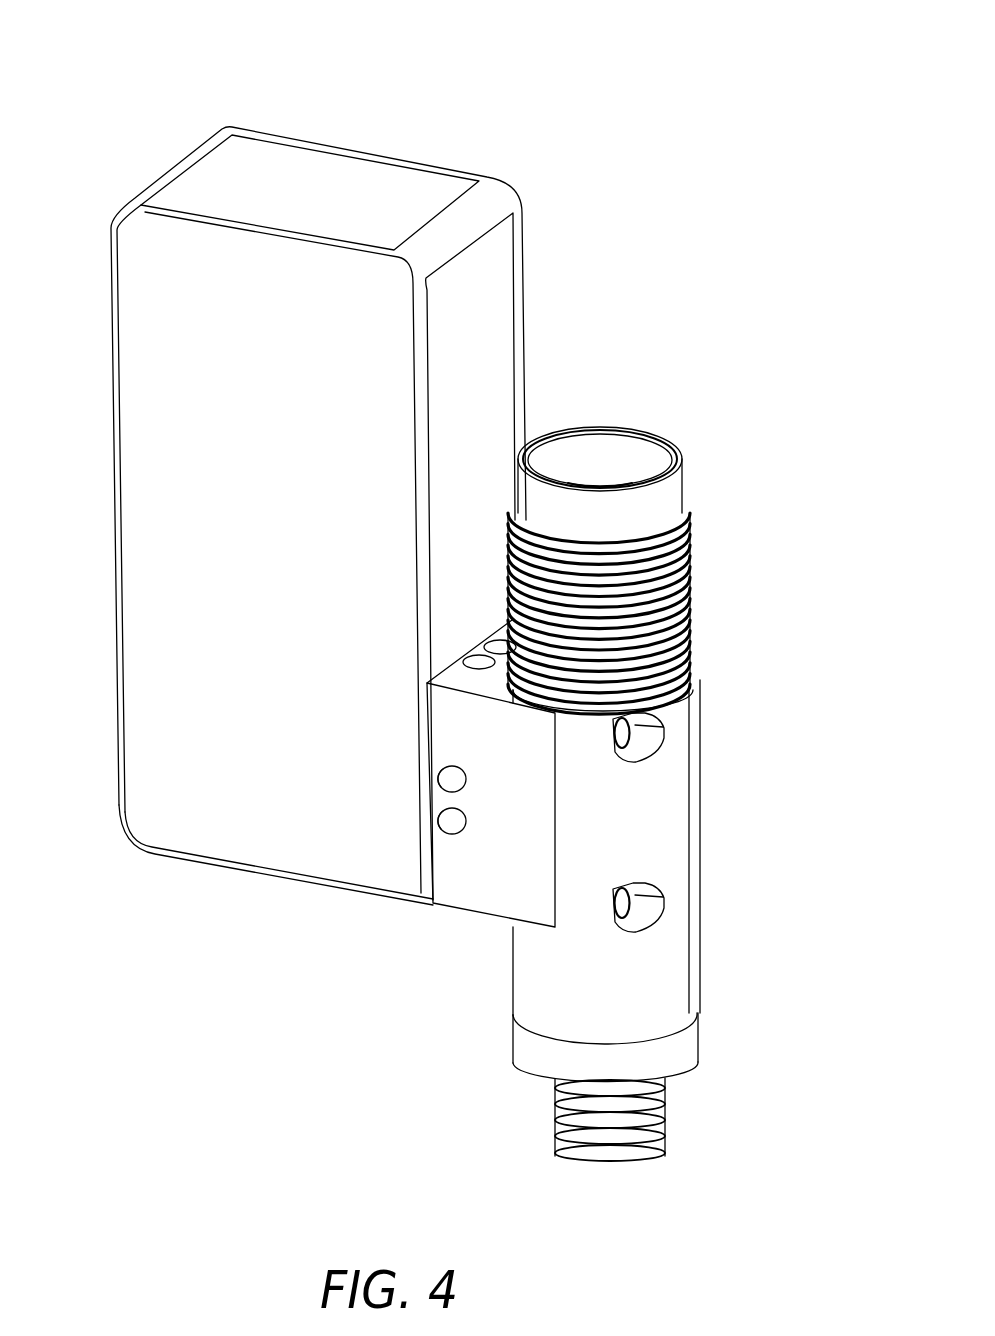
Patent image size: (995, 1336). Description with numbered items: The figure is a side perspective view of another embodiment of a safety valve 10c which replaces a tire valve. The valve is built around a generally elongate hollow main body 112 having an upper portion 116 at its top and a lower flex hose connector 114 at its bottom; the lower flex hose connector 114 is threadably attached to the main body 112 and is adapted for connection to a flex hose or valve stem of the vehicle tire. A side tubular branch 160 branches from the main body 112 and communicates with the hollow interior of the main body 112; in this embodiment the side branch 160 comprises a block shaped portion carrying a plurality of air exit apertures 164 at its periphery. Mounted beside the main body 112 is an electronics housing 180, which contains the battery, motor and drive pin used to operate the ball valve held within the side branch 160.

The safety valve 10c is at (75, 188).
The main body 112 is at (663, 838).
The lower flex hose connector 114 is at (630, 1116).
The upper portion 116 is at (660, 488).
The side tubular branch 160 is at (485, 890).
The air exit apertures 164 is at (490, 667).
The electronics housing 180 is at (185, 803).